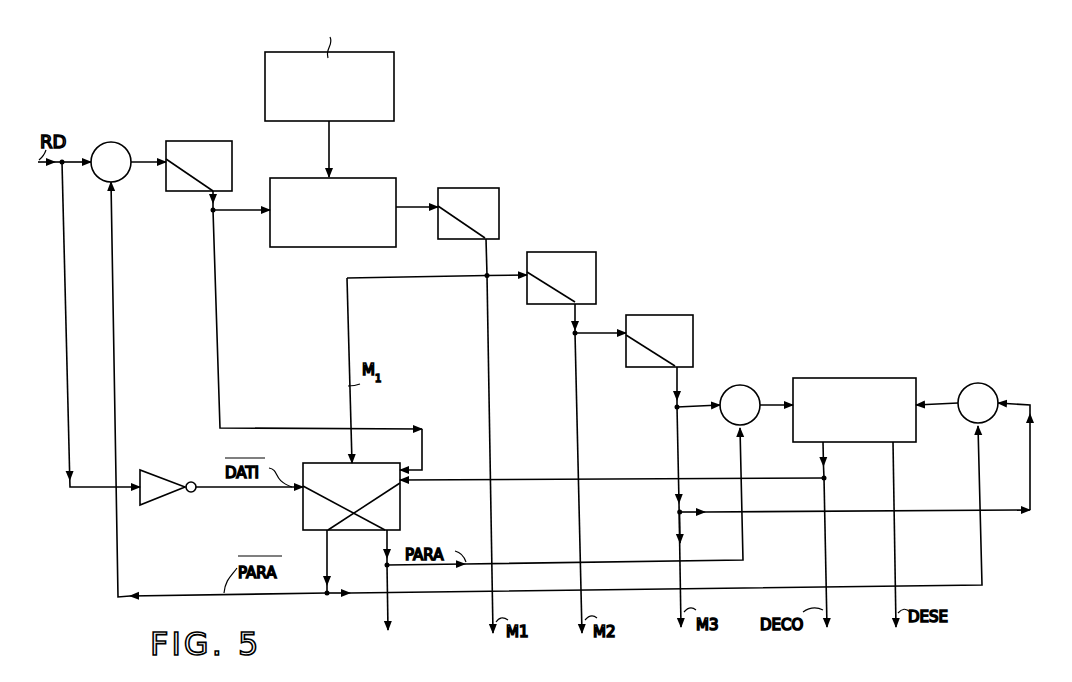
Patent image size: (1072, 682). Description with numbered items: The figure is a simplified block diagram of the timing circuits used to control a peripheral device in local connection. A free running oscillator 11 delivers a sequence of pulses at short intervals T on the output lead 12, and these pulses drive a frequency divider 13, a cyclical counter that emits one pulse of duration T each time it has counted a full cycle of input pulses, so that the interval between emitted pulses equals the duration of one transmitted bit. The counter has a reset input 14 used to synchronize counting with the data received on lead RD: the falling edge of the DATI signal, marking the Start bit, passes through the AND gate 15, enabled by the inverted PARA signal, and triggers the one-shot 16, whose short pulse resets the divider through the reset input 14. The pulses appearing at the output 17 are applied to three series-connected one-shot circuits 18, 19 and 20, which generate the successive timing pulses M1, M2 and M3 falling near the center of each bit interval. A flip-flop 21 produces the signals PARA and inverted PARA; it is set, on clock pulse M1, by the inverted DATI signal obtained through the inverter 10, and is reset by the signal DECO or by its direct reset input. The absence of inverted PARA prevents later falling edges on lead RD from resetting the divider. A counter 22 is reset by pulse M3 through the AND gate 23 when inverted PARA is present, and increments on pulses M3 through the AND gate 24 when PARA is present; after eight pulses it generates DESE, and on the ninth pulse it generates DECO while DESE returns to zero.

The inverter 10 is at (168, 472).
The free running oscillator 11 is at (394, 91).
The output lead 12 is at (333, 154).
The frequency divider 13 is at (455, 137).
The reset input 14 is at (252, 224).
The AND gate 15 is at (130, 132).
The one-shot 16 is at (199, 144).
The output 17 is at (412, 205).
The one-shot circuit 18 is at (500, 193).
The one-shot circuit 19 is at (598, 266).
The one-shot circuit 20 is at (695, 315).
The flip-flop 21 is at (303, 508).
The counter 22 is at (885, 378).
The AND gate 23 is at (978, 383).
The AND gate 24 is at (749, 385).